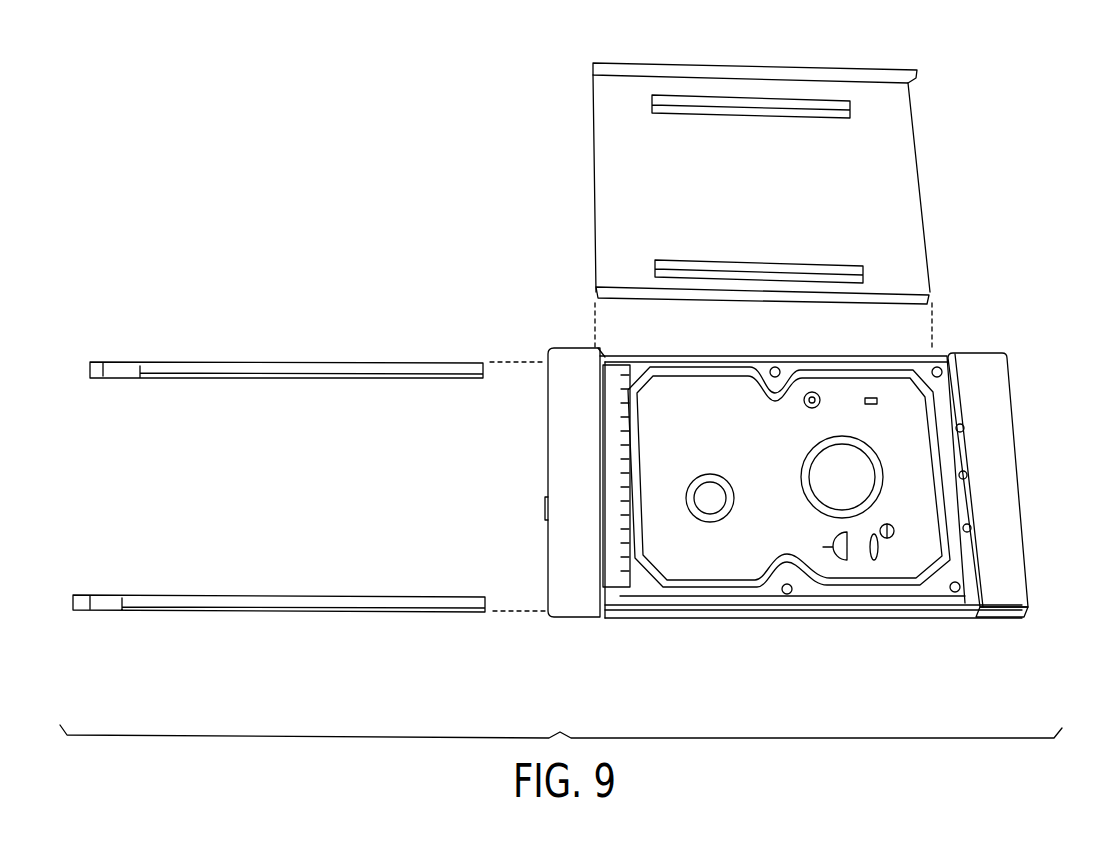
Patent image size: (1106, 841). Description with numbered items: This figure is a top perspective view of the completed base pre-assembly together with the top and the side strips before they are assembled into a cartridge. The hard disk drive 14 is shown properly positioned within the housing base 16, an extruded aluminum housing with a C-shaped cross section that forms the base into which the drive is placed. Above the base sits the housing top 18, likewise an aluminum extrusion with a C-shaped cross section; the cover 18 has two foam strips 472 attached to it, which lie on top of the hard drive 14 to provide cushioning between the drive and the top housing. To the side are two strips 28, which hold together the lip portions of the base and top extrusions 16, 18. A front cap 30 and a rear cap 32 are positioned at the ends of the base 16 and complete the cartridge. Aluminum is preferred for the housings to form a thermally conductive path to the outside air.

The hard disk drive 14 is at (902, 558).
The housing base 16 is at (813, 620).
The housing top 18 is at (914, 168).
The strip 28 is at (357, 367).
The front cap 30 is at (1007, 479).
The rear cap 32 is at (558, 455).
The foam strips 472 is at (823, 103).